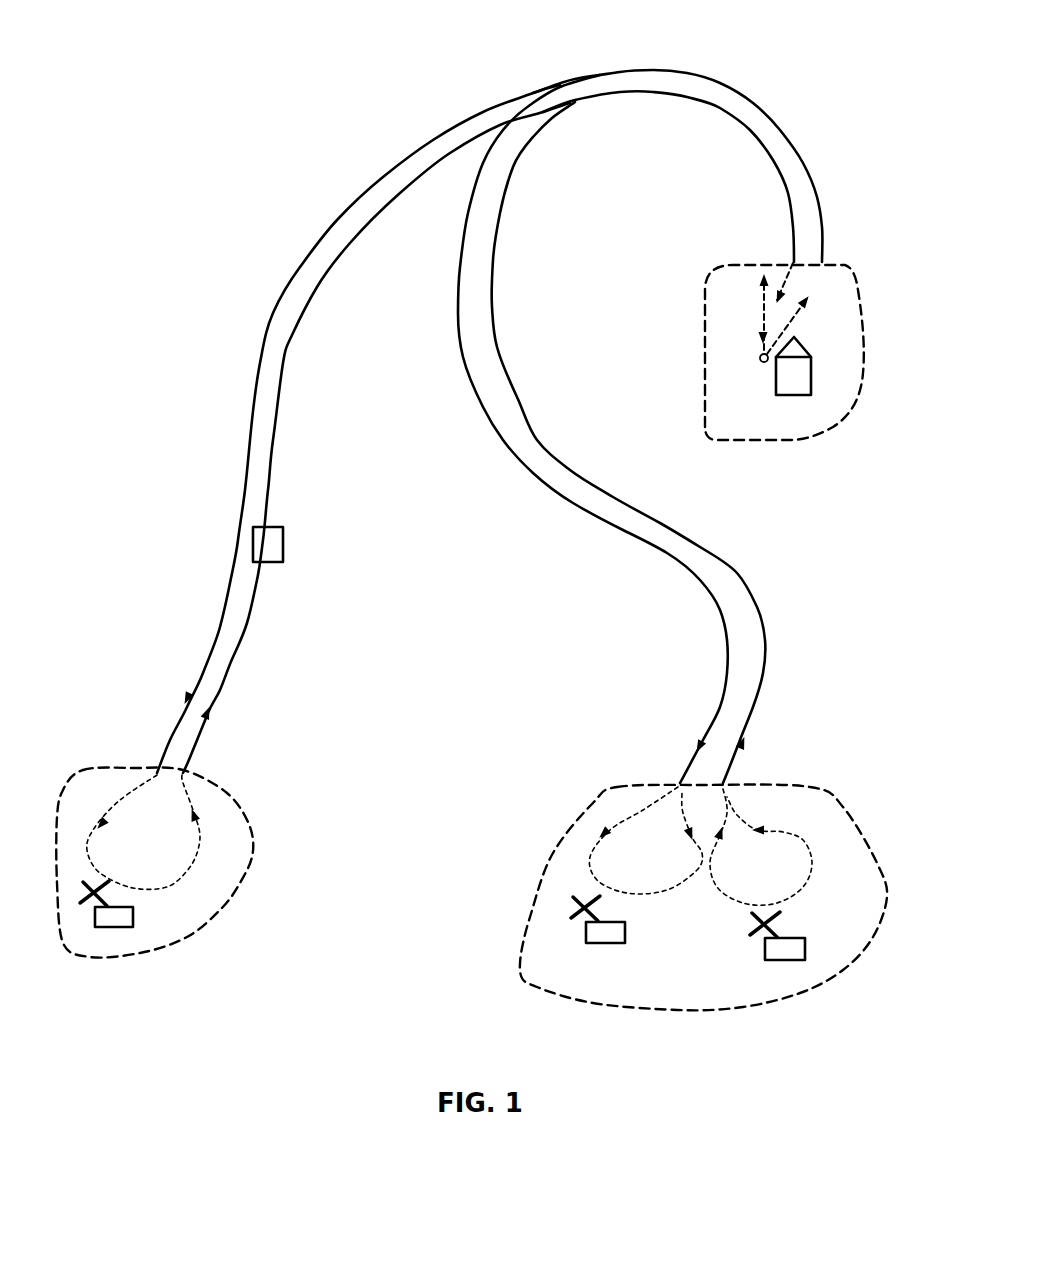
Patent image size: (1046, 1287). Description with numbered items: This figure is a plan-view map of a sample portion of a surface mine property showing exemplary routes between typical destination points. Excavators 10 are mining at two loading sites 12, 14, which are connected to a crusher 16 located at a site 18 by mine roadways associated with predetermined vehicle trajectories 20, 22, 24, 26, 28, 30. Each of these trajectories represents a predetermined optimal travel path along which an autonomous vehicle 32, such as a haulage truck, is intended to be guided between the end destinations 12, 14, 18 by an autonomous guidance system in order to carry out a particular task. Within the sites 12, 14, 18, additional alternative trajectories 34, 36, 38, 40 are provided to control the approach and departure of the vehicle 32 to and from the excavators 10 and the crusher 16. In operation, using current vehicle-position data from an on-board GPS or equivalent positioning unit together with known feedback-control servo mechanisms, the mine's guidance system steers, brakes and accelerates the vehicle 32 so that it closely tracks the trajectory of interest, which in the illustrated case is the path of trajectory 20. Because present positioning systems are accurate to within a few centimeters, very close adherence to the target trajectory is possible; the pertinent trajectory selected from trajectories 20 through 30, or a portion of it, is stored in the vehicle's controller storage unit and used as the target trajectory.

The excavator 10 is at (118, 917).
The loading site 12 is at (240, 883).
The loading site 14 is at (800, 993).
The crusher 16 is at (812, 358).
The site 18 is at (853, 407).
The predetermined vehicle trajectory 20 is at (233, 667).
The predetermined vehicle trajectory 22 is at (220, 630).
The predetermined vehicle trajectory 24 is at (673, 97).
The predetermined vehicle trajectory 26 is at (707, 73).
The predetermined vehicle trajectory 28 is at (763, 693).
The predetermined vehicle trajectory 30 is at (725, 683).
The autonomous vehicle 32 is at (283, 537).
The alternative trajectory 34 is at (203, 837).
The alternative trajectory 36 is at (623, 827).
The alternative trajectory 38 is at (783, 835).
The alternative trajectory 40 is at (813, 290).